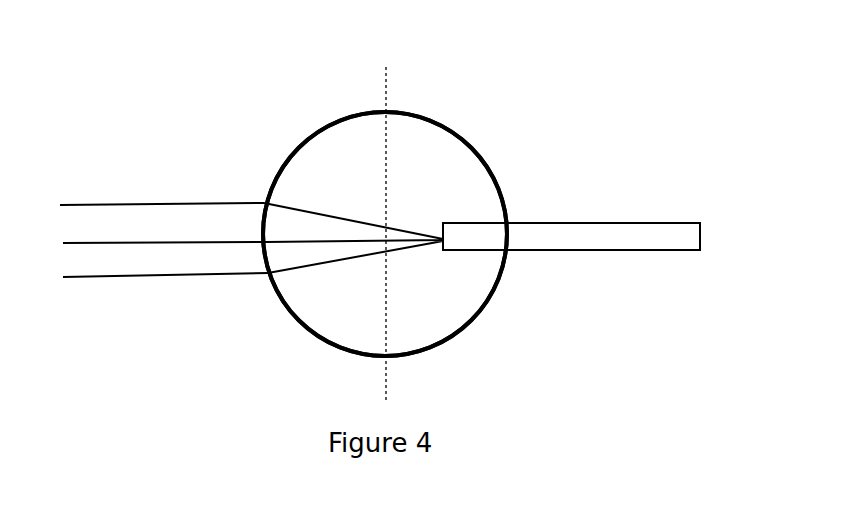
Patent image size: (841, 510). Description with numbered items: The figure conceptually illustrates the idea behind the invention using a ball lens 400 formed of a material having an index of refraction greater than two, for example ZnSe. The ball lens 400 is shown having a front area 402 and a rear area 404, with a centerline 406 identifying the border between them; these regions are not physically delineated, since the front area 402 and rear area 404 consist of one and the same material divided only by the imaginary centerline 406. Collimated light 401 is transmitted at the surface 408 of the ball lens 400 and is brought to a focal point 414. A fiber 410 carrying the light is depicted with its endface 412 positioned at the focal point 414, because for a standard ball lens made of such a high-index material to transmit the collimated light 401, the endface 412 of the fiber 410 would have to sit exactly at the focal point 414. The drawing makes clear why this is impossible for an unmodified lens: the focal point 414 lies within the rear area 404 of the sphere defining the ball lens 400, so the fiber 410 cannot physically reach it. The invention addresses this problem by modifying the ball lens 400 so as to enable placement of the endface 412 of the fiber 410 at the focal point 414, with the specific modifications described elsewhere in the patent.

The ball lens 400 is at (500, 190).
The collimated light 401 is at (338, 263).
The front area 402 is at (317, 157).
The rear area 404 is at (418, 143).
The centerline 406 is at (382, 90).
The surface 408 is at (235, 224).
The fiber 410 is at (636, 222).
The endface 412 is at (443, 204).
The focal point 414 is at (441, 272).